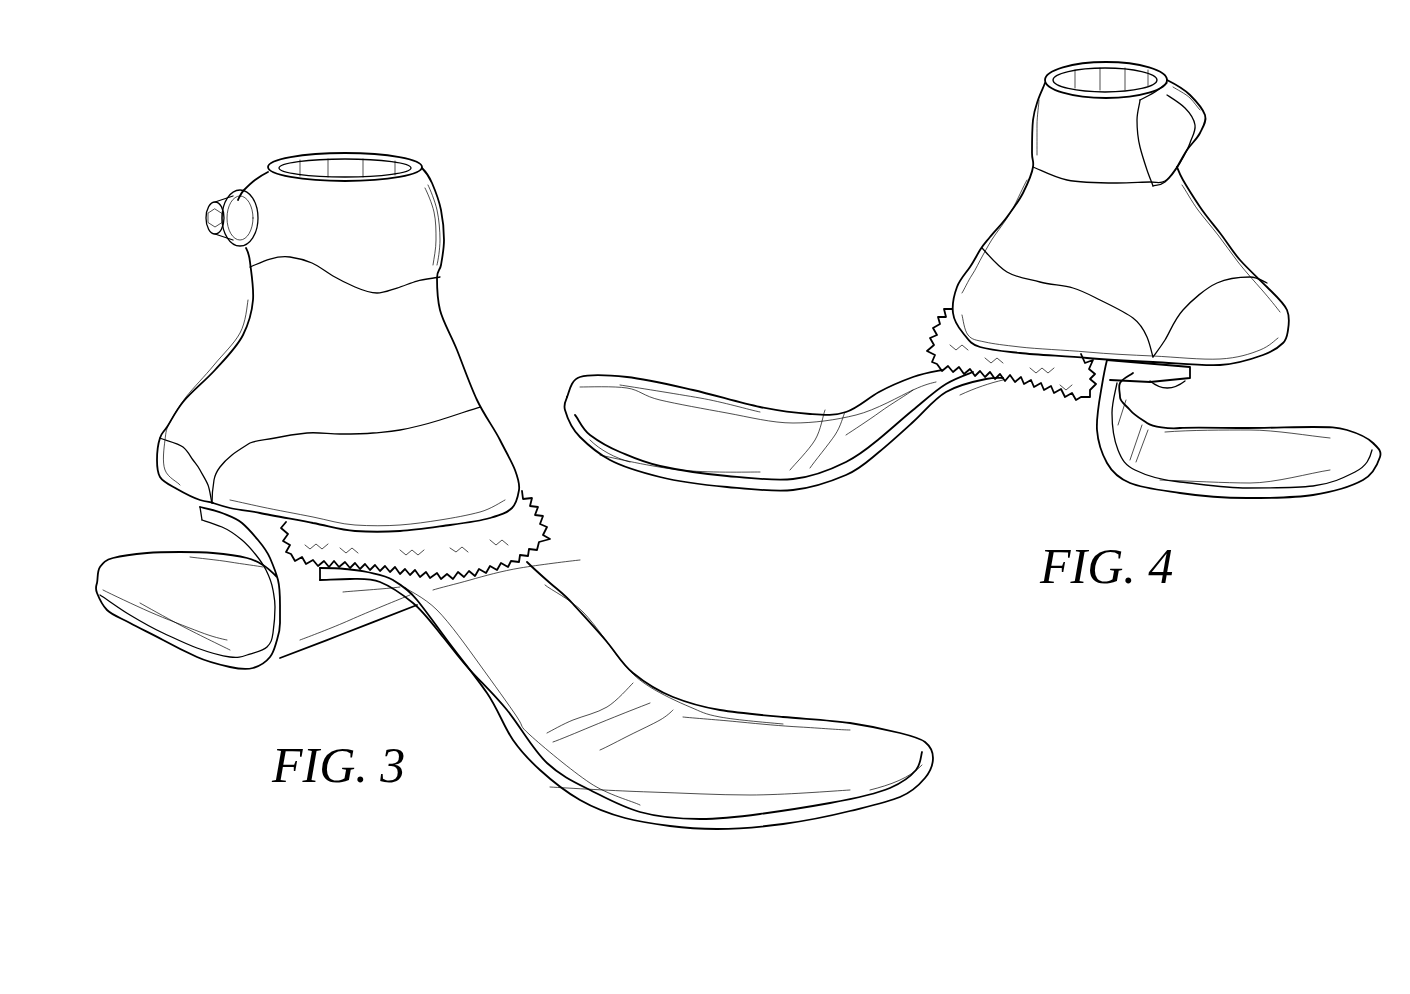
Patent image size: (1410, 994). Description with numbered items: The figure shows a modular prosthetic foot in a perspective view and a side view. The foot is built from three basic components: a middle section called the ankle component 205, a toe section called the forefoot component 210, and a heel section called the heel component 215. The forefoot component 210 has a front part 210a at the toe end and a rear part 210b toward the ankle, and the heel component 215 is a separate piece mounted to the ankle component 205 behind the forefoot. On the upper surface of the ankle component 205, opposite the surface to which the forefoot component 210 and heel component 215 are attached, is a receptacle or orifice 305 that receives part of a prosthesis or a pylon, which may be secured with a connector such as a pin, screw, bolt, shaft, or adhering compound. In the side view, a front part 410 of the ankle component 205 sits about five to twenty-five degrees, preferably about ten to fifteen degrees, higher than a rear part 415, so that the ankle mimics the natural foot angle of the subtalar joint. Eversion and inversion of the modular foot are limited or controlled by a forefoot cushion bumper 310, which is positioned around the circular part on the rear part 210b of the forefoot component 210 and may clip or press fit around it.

In FIG. 3, the ankle component 205 is at (423, 343).
In FIG. 4, the ankle component 205 is at (1173, 230).
In FIG. 3, the receptacle or orifice 305 is at (358, 170).
In FIG. 4, the receptacle or orifice 305 is at (1123, 72).
In FIG. 3, the forefoot cushion bumper 310 is at (527, 520).
In FIG. 4, the forefoot cushion bumper 310 is at (930, 330).
In FIG. 3, the forefoot component 210 is at (780, 753).
In FIG. 4, the forefoot component 210 is at (690, 423).
In FIG. 3, the front part of the forefoot component 210a is at (797, 823).
In FIG. 4, the front part of the forefoot component 210a is at (693, 490).
In FIG. 3, the rear part of the forefoot component 210b is at (368, 580).
In FIG. 4, the rear part of the forefoot component 210b is at (1003, 385).
In FIG. 3, the heel component 215 is at (168, 583).
In FIG. 4, the heel component 215 is at (1280, 440).
In FIG. 4, the front part of the ankle component 410 is at (983, 318).
In FIG. 4, the rear part of the ankle component 415 is at (1270, 320).